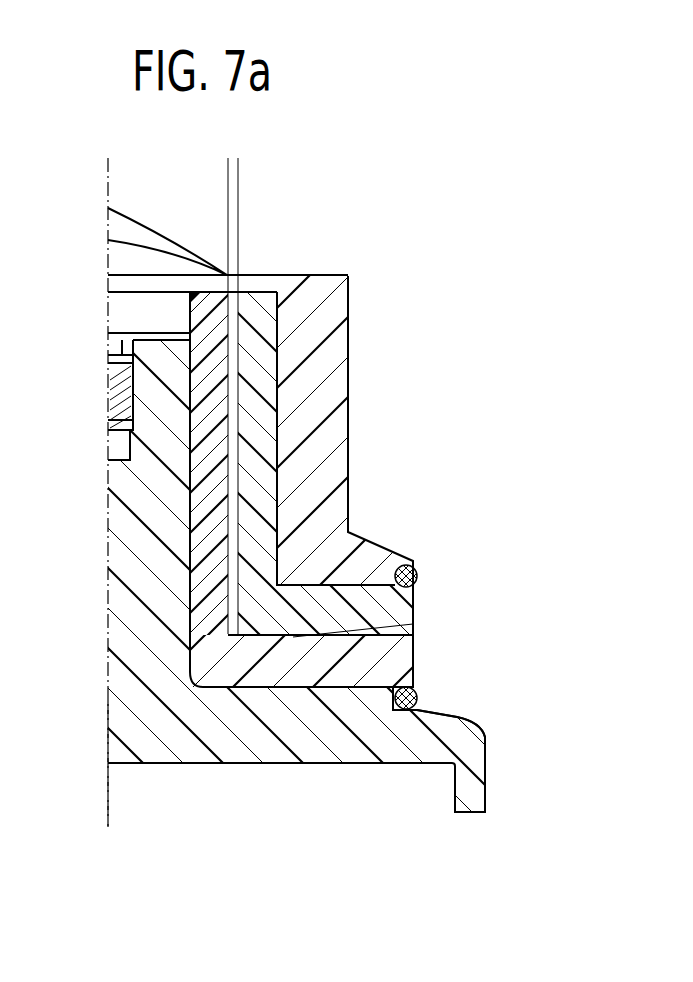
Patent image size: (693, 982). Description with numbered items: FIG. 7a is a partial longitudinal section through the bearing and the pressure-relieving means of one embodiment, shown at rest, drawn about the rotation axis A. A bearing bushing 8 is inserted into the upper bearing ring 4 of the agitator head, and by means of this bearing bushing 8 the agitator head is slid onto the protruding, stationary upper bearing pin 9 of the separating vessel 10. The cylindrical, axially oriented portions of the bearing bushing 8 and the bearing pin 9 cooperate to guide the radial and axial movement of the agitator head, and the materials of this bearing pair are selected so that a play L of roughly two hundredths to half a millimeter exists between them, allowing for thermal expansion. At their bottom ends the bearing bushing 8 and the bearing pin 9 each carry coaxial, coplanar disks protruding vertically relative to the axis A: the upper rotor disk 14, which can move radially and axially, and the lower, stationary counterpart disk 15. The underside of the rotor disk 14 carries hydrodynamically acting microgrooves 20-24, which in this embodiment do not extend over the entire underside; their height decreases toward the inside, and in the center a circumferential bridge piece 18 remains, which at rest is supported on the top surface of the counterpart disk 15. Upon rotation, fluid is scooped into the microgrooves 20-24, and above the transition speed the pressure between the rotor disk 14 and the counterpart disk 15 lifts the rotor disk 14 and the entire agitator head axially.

The upper bearing ring 4 is at (333, 457).
The bearing bushing 8 is at (260, 387).
The bearing pin 9 is at (207, 331).
The separating vessel 10 is at (472, 750).
The rotor disk 14 is at (413, 600).
The counterpart disk 15 is at (398, 658).
The bridge piece 18 is at (256, 638).
The microgrooves 20-24 is at (405, 628).
The rotation axis A is at (108, 810).
The play L is at (168, 171).